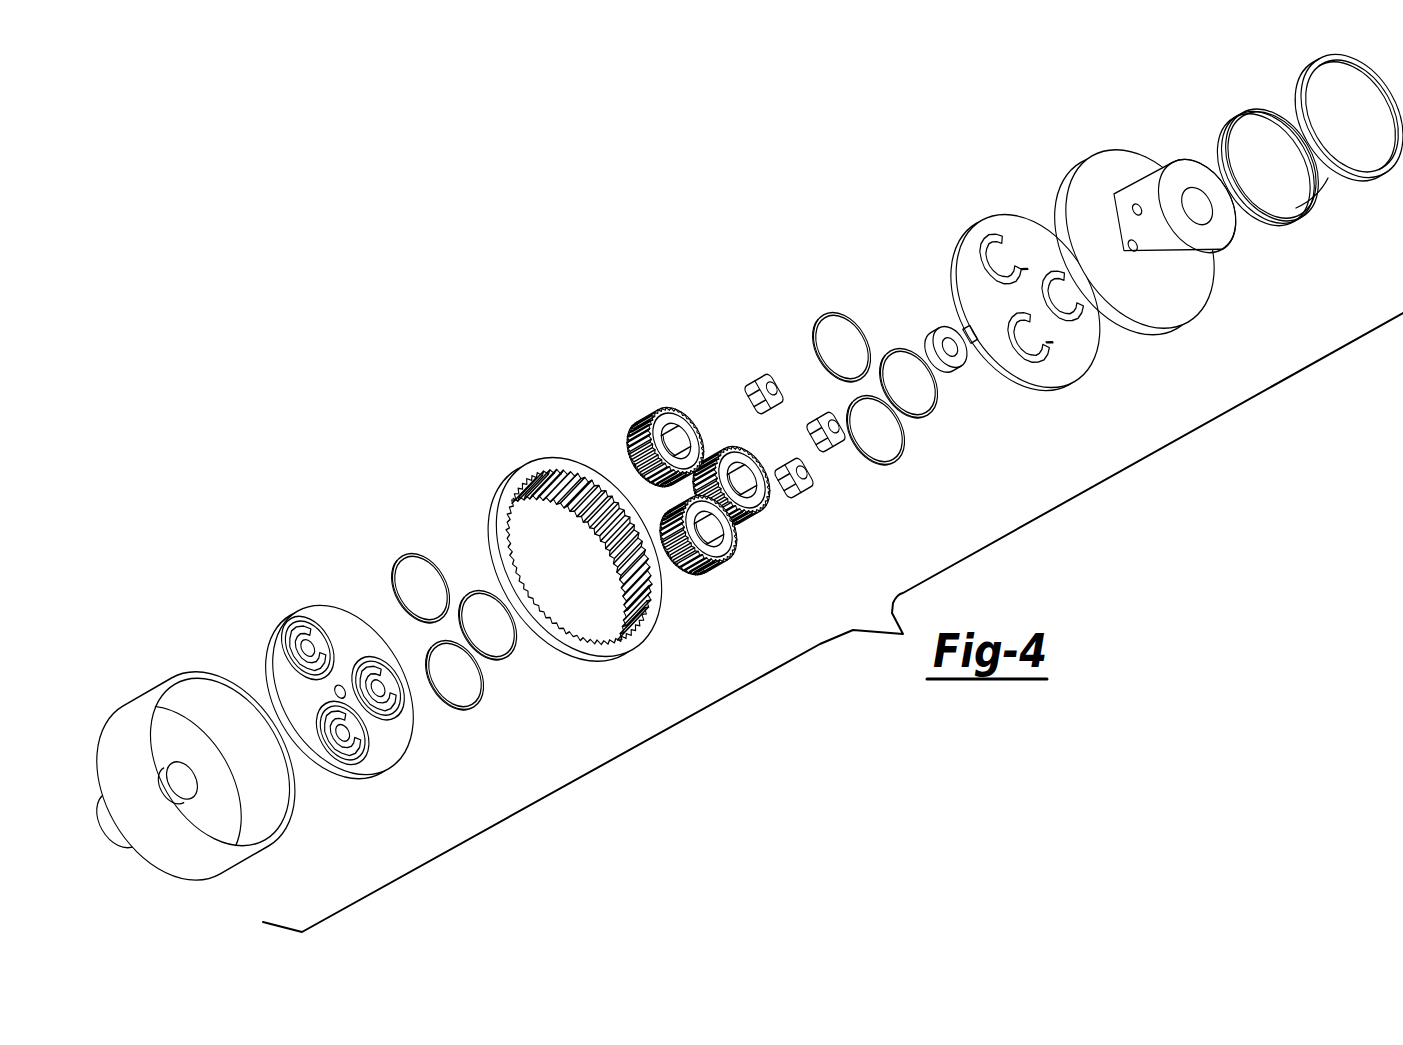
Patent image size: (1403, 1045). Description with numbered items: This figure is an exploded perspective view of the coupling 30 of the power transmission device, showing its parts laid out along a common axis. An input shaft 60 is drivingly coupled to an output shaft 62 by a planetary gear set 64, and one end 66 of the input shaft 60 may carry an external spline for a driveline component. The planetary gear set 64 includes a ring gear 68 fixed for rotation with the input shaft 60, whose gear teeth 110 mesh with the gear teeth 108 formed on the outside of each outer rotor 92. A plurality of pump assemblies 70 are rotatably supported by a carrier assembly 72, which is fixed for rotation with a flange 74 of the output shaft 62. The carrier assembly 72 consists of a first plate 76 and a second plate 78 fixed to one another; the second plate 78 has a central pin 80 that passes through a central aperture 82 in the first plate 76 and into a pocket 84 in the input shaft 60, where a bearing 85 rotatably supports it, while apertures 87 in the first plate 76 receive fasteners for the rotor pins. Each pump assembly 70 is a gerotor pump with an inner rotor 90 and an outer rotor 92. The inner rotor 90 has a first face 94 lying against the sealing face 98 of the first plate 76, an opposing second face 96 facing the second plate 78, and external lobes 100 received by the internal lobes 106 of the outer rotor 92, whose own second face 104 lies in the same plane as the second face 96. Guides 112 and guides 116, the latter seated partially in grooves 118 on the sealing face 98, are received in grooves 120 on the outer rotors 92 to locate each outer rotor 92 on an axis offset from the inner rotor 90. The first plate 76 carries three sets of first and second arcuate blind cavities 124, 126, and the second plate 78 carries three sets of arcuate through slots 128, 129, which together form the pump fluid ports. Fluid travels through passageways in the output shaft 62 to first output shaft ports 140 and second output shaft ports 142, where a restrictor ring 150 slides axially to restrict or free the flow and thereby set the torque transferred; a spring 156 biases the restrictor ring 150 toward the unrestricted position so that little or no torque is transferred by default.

The coupling 30 is at (640, 198).
The input shaft 60 is at (135, 667).
The output shaft 62 is at (1095, 138).
The planetary gear set 64 is at (485, 428).
The end of input shaft 66 is at (136, 810).
The ring gear 68 is at (490, 490).
The pump assembly 70 is at (635, 383).
The carrier assembly 72 is at (1030, 425).
The flange 74 is at (1149, 233).
The first plate 76 is at (250, 630).
The second plate 78 is at (945, 238).
The central pin 80 is at (1022, 303).
The central aperture 82 is at (339, 691).
The pocket 84 is at (178, 782).
The bearing 85 is at (960, 370).
The apertures 87 is at (306, 649).
The inner rotor 90 is at (752, 370).
The outer rotor 92 is at (632, 414).
The first face 94 is at (748, 414).
The second face 96 is at (765, 378).
The sealing face 98 is at (330, 620).
The lobes 100 is at (812, 424).
The second face 104 is at (676, 418).
The internal lobes 106 is at (710, 522).
The gear teeth 108 is at (650, 462).
The gear teeth 110 is at (622, 575).
The guides 112 is at (843, 315).
The guides 116 is at (407, 553).
The grooves 118 is at (343, 733).
The grooves 120 is at (737, 550).
The first arcuately shaped blind cavities 124 is at (343, 668).
The second arcuately shaped blind cavities 126 is at (358, 711).
The first arcuately shaped through slots 128 is at (1036, 305).
The second arcuately shaped through slots 129 is at (1027, 291).
The first output shaft ports 140 is at (1132, 245).
The second output shaft ports 142 is at (1137, 209).
The restrictor ring 150 is at (1313, 73).
The spring 156 is at (1297, 210).